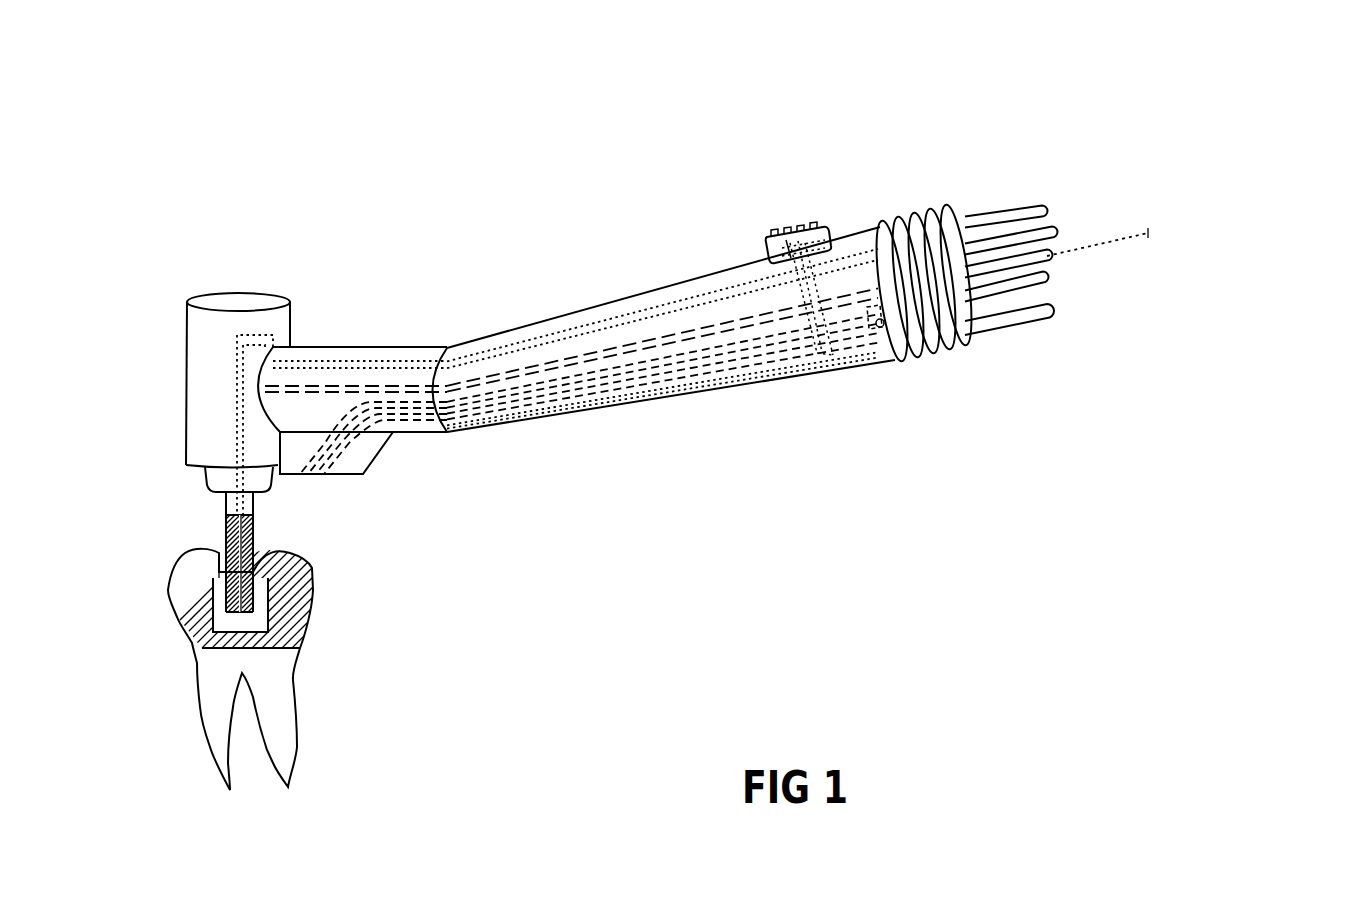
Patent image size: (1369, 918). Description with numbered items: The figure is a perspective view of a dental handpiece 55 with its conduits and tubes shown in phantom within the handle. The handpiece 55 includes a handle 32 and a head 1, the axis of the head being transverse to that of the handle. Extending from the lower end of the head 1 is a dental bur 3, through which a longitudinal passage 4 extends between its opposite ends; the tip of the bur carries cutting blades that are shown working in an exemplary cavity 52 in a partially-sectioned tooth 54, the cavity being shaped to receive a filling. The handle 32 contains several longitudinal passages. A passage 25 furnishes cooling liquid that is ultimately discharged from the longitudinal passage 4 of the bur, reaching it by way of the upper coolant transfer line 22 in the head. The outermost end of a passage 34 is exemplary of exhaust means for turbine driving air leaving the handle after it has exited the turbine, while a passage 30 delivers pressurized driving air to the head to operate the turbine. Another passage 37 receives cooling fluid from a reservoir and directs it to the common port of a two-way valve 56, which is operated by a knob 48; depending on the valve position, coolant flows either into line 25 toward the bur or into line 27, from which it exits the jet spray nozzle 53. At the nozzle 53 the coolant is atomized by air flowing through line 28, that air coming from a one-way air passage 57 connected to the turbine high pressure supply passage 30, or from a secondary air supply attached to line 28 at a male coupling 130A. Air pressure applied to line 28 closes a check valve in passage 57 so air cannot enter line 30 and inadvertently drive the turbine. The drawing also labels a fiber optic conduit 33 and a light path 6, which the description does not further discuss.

The head 1 is at (188, 300).
The upper coolant transfer line 22 is at (267, 335).
The longitudinal passage 4 is at (228, 522).
The dental bur 3 is at (201, 535).
The cavity 52 is at (220, 600).
The tooth 54 is at (300, 648).
The dental handpiece 55 is at (473, 274).
The jet spray nozzle 53 is at (327, 478).
The passage 25 is at (653, 305).
The handle 32 is at (788, 406).
The line 27 is at (622, 392).
The line 28 is at (352, 457).
The 2-way valve 56 is at (833, 208).
The knob 48 is at (787, 230).
The fiber optic light path 6 is at (715, 344).
The one-way air passage 57 is at (882, 328).
The bellows connector 130A is at (982, 350).
The passage 37 is at (1042, 207).
The passage 34 is at (1052, 227).
The passage 30 is at (1047, 250).
The fiber optic conduit 33 is at (1045, 273).